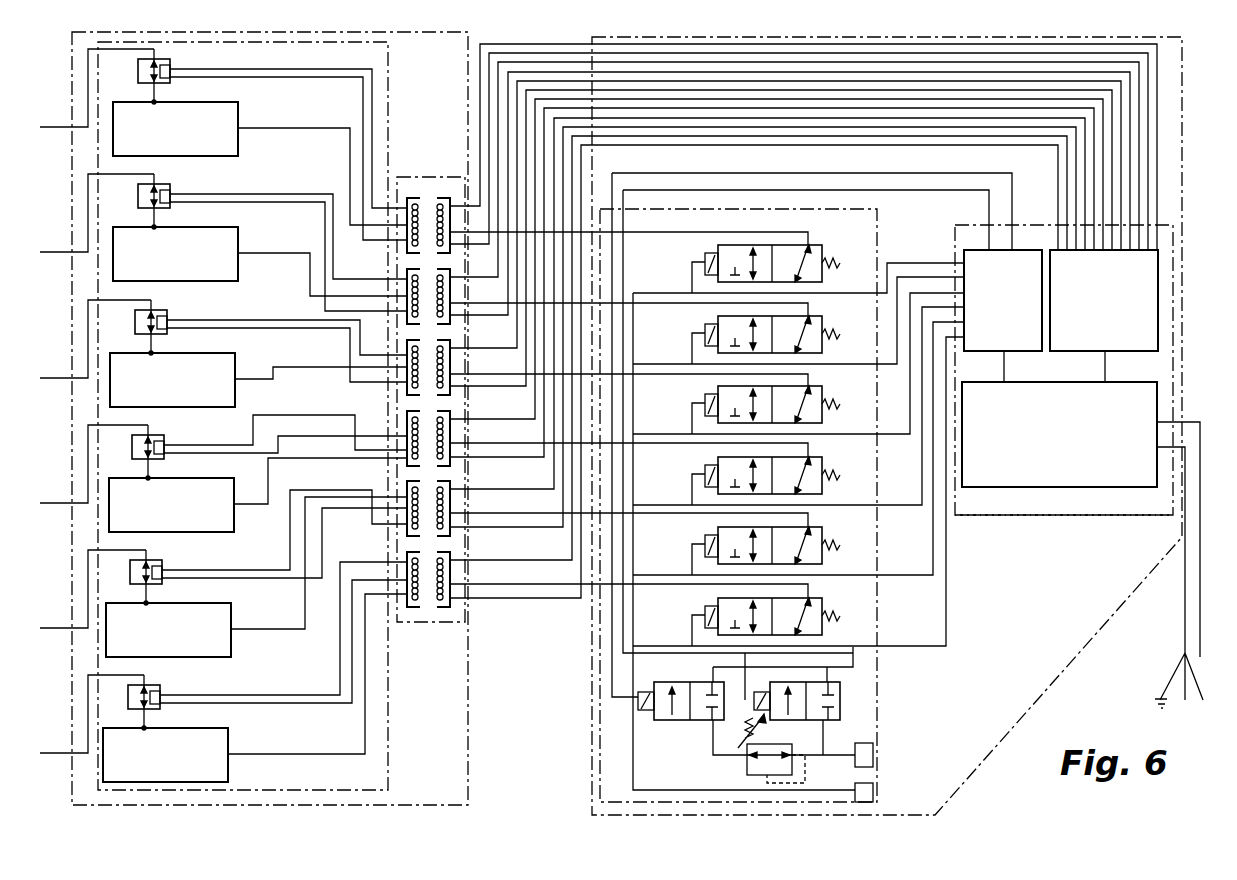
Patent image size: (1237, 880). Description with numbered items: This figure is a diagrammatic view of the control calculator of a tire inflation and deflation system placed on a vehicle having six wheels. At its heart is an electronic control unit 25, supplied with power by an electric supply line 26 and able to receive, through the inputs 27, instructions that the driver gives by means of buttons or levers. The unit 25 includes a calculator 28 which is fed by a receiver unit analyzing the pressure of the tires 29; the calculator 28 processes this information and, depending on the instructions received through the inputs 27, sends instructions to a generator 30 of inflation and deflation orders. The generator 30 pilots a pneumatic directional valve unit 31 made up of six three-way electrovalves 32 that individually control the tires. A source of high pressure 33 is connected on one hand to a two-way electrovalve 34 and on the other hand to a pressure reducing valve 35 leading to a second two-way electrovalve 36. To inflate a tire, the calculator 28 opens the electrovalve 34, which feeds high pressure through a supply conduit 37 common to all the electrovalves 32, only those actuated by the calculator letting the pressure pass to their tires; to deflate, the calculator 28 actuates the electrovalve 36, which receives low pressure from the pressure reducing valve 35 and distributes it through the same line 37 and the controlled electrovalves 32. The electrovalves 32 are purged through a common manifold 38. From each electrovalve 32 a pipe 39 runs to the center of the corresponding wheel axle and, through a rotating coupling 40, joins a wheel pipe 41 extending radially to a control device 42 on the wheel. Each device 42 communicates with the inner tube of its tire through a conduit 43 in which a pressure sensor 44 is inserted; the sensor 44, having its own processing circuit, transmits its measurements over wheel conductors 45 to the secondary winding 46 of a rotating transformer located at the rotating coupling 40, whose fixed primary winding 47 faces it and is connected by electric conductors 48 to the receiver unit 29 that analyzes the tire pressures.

The electronic control unit 25 is at (1008, 516).
The electric supply line 26 is at (1183, 648).
The inputs 27 is at (1200, 592).
The calculator 28 is at (1090, 488).
The receiver unit analyzing the pressure of the tires 29 is at (1160, 283).
The generator of orders 30 is at (1018, 250).
The pneumatic directional valve unit 31 is at (874, 790).
The three-way electrovalve 32 is at (822, 252).
The source of high pressure 33 is at (874, 755).
The two-way electrovalve 34 is at (845, 708).
The pressure reducing valve 35 is at (748, 770).
The second two-way electrovalve 36 is at (684, 722).
The supply conduit 37 is at (872, 481).
The common manifold 38 is at (624, 763).
The pipe 39 is at (488, 234).
The rotating coupling 40 is at (440, 197).
The wheel pipe 41 is at (326, 130).
The control device 42 is at (237, 282).
The conduit 43 is at (116, 302).
The pressure sensor 44 is at (185, 290).
The wheel conductors 45 is at (298, 414).
The secondary winding 46 is at (407, 452).
The fixed primary winding 47 is at (452, 490).
The electric conductors 48 is at (573, 548).